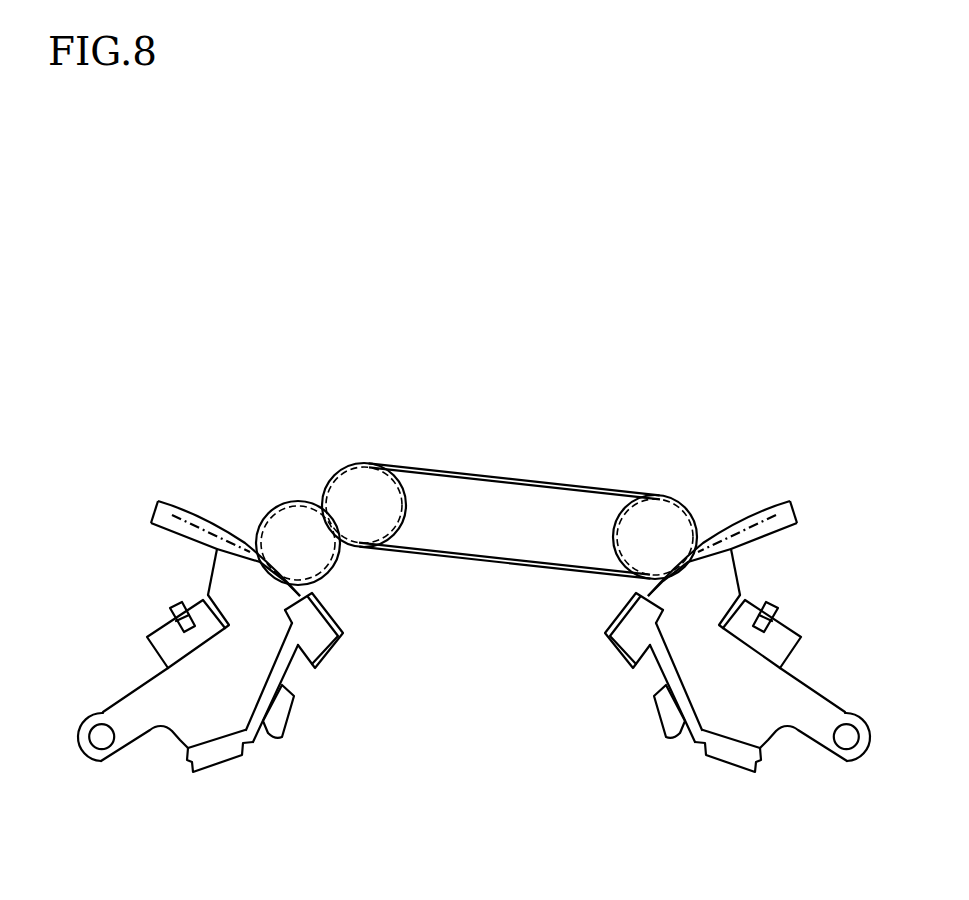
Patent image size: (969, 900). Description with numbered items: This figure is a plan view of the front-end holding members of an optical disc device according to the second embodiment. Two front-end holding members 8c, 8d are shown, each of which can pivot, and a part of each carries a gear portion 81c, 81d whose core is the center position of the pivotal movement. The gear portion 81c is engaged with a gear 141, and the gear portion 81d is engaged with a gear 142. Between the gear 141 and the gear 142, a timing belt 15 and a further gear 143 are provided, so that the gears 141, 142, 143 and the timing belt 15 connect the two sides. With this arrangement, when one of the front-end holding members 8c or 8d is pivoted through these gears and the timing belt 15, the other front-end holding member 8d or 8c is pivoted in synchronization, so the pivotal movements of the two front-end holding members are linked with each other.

The front-end holding member 8c is at (152, 700).
The front-end holding member 8d is at (798, 700).
The gear portion 81c is at (193, 512).
The gear portion 81d is at (750, 510).
The gear 141 is at (287, 528).
The gear 142 is at (655, 518).
The gear 143 is at (371, 490).
The timing belt 15 is at (482, 474).